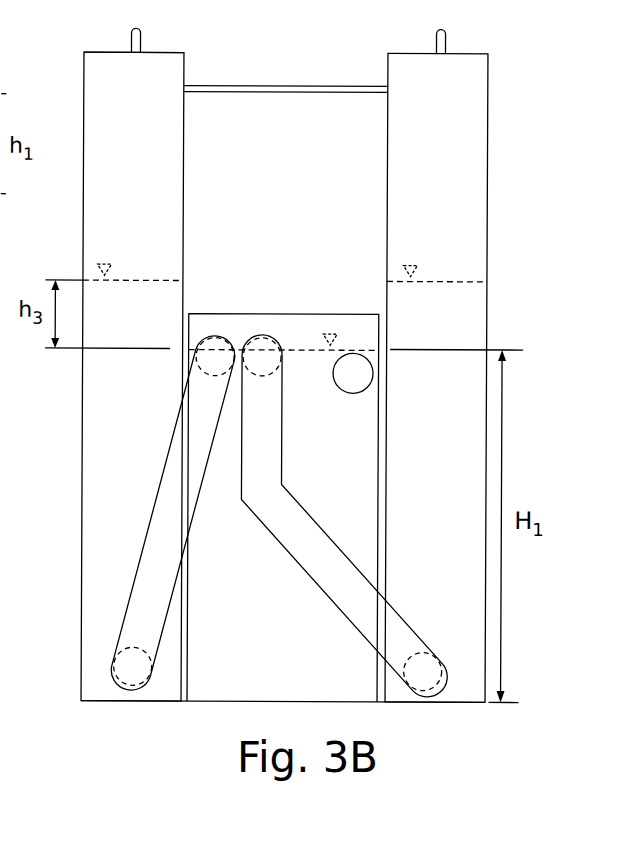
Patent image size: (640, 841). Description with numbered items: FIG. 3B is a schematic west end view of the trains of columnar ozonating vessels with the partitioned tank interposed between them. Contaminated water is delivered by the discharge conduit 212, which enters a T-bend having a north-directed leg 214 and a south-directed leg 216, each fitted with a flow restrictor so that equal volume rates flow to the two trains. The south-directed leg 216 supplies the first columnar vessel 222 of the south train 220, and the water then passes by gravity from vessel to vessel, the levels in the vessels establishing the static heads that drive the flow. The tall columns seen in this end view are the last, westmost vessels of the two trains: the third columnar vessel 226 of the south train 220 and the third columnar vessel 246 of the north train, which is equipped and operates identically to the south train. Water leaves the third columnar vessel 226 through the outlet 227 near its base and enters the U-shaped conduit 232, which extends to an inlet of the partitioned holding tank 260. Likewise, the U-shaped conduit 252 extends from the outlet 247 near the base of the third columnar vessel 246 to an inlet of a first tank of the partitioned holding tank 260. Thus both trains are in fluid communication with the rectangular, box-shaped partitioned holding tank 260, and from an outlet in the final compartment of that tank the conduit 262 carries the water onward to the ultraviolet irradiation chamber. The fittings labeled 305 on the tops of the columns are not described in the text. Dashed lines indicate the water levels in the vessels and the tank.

The discharge conduit 212 is at (92, 371).
The north-directed leg 214 is at (208, 84).
The south-directed leg 216 is at (370, 84).
The south train 220 is at (512, 157).
The first columnar vessel 222 is at (248, 254).
The third columnar vessel 226 is at (490, 72).
The outlet 227 is at (433, 676).
The U-shaped conduit 232 is at (302, 510).
The third columnar vessel 246 is at (115, 52).
The outlet 247 is at (128, 675).
The U-shaped conduit 252 is at (146, 522).
The partitioned holding tank 260 is at (327, 313).
The conduit 262 is at (355, 394).
The vent valve 305 is at (142, 43).